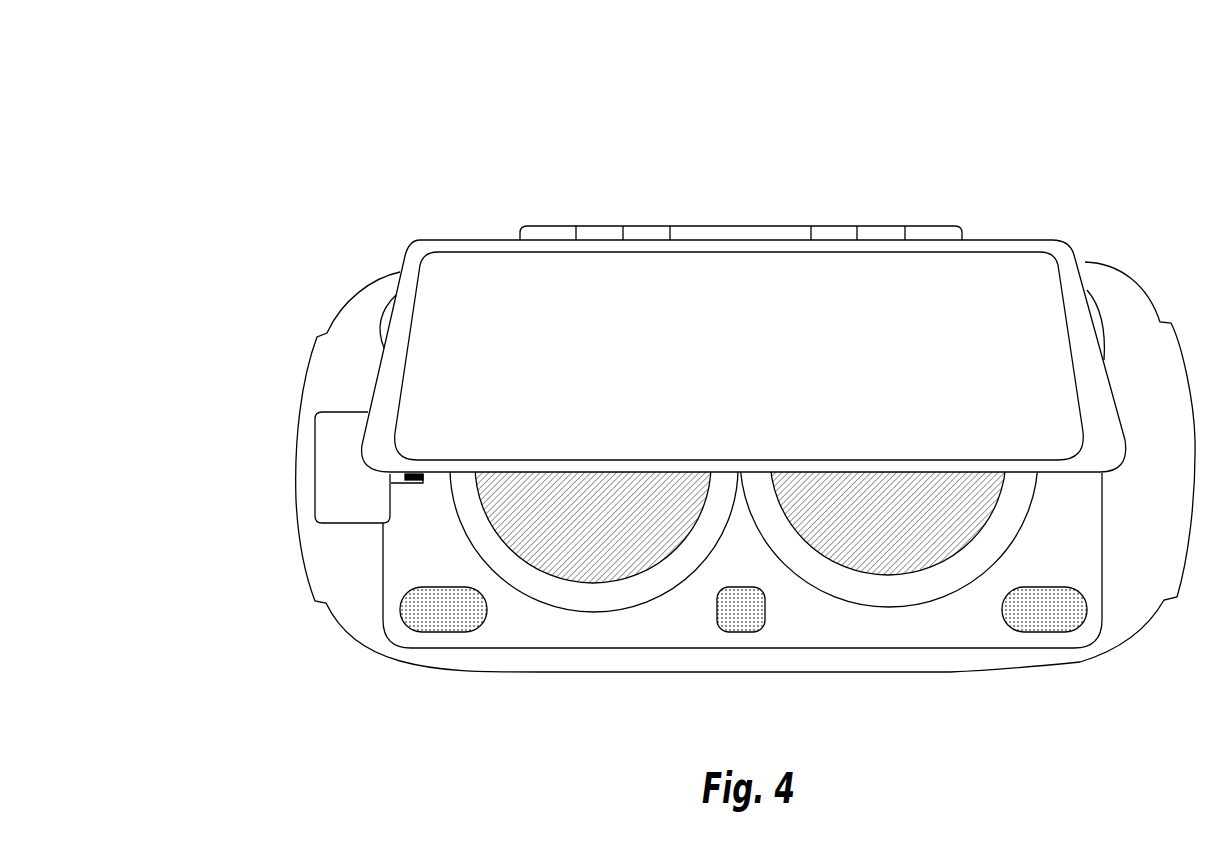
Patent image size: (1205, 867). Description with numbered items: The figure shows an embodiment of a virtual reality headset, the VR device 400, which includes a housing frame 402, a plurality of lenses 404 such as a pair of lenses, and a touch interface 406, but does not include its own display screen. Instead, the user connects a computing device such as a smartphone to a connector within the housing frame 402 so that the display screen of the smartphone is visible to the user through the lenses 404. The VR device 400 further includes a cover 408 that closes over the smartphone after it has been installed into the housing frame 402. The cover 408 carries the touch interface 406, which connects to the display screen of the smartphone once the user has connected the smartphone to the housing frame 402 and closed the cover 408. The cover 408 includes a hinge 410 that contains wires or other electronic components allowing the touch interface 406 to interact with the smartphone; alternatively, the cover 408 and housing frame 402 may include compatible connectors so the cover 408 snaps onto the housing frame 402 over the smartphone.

The VR device 400 is at (325, 63).
The housing frame 402 is at (1140, 283).
The lenses 404 is at (568, 583).
The touch interface 406 is at (1018, 252).
The cover 408 is at (403, 257).
The hinge 410 is at (645, 226).